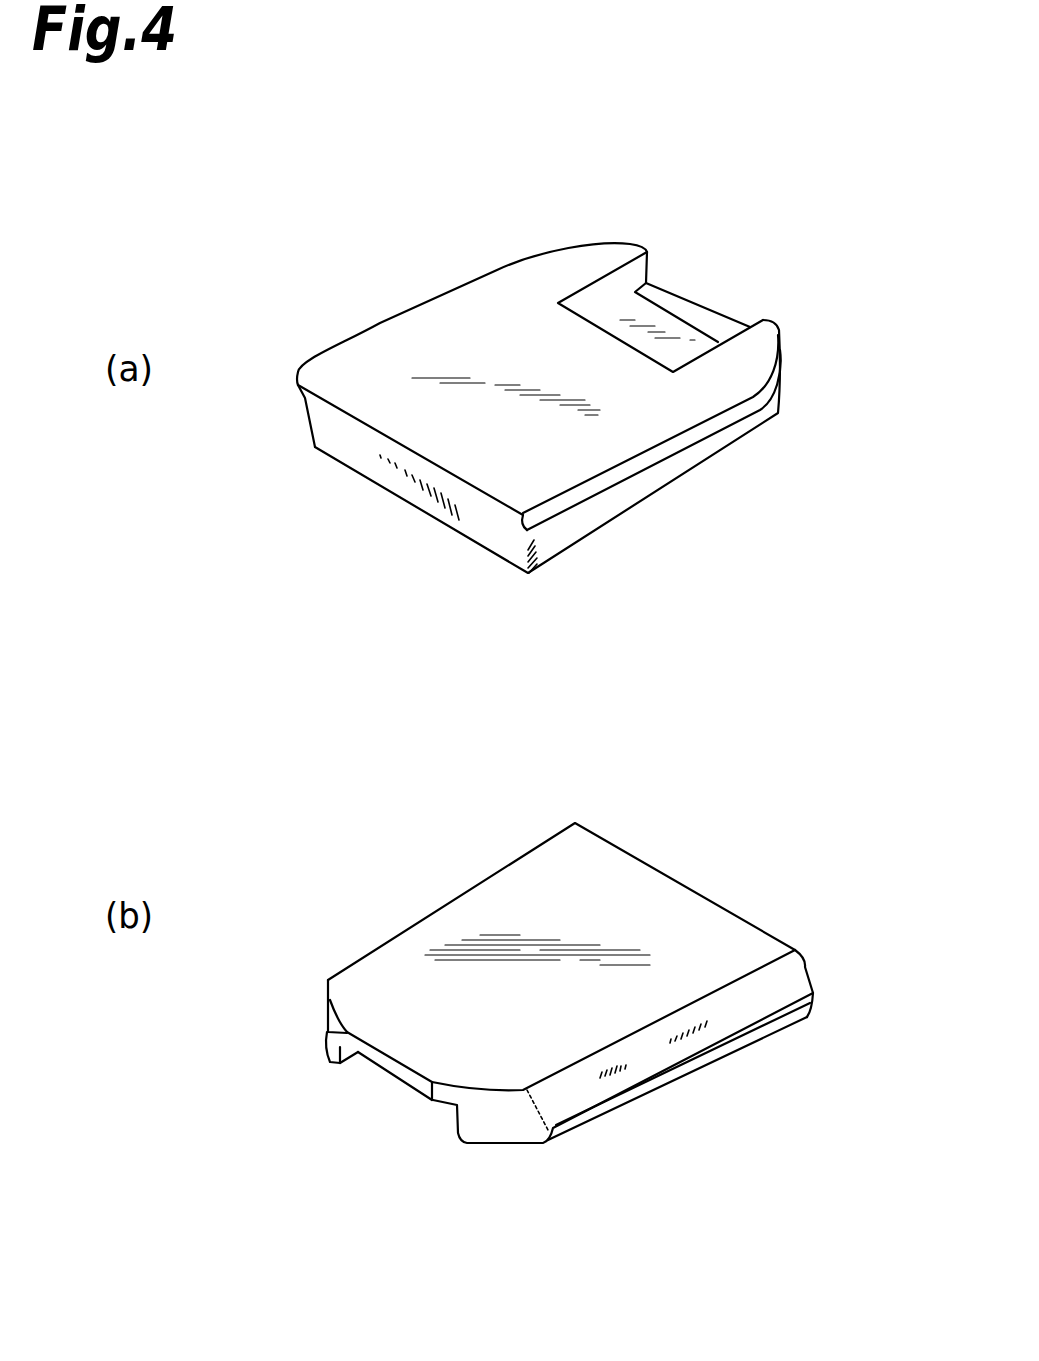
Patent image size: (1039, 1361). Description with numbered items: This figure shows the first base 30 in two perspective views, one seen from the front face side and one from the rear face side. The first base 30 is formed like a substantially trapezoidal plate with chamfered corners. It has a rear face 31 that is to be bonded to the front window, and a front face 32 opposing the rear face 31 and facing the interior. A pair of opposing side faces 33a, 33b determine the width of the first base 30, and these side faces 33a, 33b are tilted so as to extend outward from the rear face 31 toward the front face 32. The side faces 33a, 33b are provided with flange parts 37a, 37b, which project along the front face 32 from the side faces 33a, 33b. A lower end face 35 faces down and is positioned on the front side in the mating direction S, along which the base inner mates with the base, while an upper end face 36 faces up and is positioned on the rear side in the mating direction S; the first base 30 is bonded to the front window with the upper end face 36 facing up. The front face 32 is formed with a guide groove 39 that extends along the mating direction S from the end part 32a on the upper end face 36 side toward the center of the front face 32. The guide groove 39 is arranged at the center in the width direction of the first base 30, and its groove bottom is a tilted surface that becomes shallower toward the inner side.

The first base 30 is at (403, 168).
The rear face 31 is at (534, 920).
The front face 32 is at (510, 350).
The end part 32a is at (737, 317).
The side face 33a is at (578, 538).
The side face 33b is at (738, 1013).
The lower end face 35 is at (425, 493).
The upper end face 36 is at (707, 303).
The flange part 37a is at (672, 462).
The flange part 37b is at (380, 325).
The guide groove 39 is at (672, 340).
The mating direction S is at (737, 275).